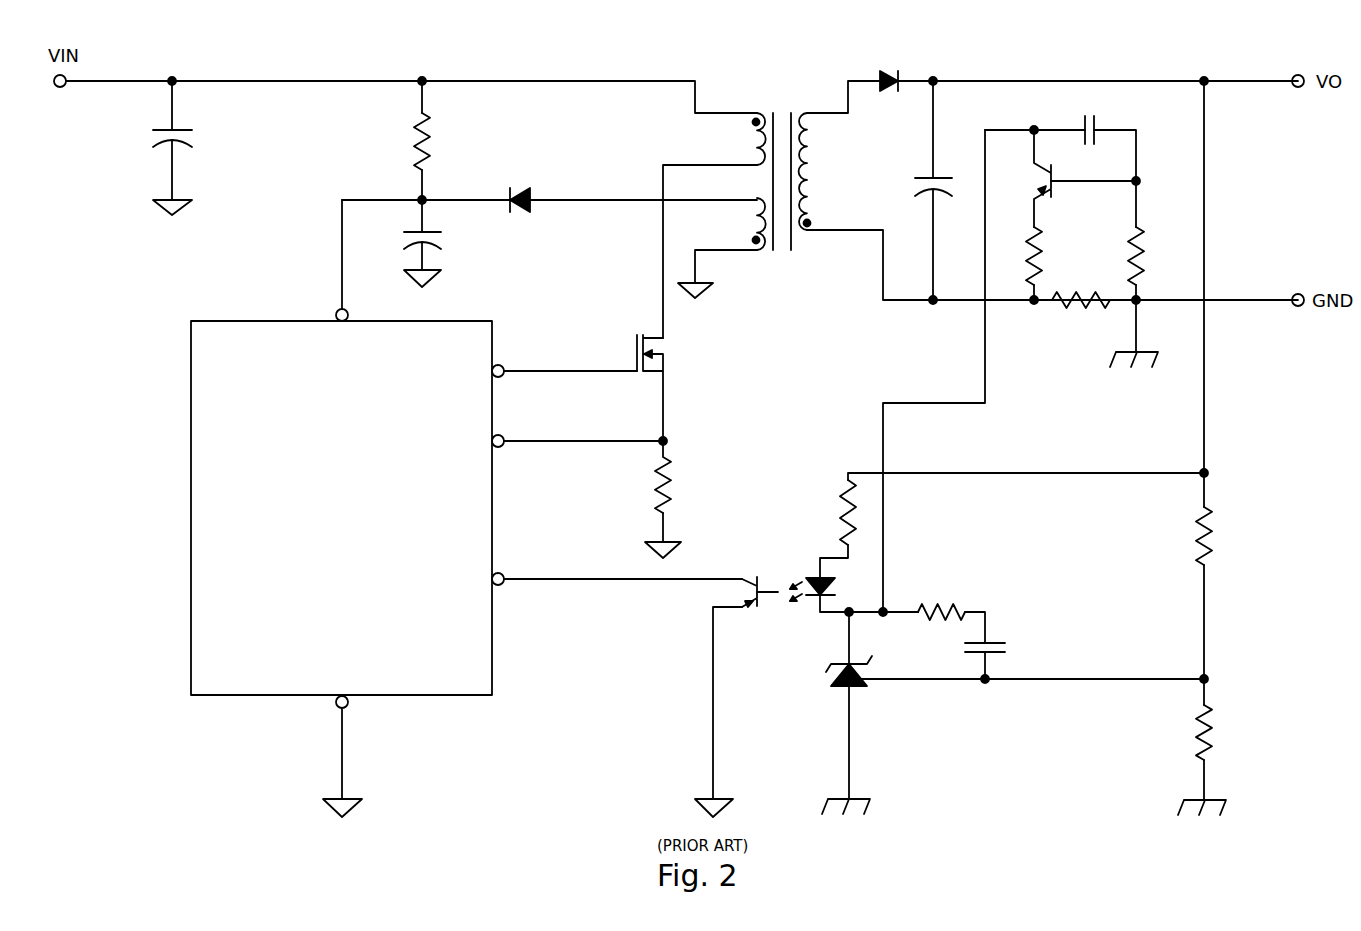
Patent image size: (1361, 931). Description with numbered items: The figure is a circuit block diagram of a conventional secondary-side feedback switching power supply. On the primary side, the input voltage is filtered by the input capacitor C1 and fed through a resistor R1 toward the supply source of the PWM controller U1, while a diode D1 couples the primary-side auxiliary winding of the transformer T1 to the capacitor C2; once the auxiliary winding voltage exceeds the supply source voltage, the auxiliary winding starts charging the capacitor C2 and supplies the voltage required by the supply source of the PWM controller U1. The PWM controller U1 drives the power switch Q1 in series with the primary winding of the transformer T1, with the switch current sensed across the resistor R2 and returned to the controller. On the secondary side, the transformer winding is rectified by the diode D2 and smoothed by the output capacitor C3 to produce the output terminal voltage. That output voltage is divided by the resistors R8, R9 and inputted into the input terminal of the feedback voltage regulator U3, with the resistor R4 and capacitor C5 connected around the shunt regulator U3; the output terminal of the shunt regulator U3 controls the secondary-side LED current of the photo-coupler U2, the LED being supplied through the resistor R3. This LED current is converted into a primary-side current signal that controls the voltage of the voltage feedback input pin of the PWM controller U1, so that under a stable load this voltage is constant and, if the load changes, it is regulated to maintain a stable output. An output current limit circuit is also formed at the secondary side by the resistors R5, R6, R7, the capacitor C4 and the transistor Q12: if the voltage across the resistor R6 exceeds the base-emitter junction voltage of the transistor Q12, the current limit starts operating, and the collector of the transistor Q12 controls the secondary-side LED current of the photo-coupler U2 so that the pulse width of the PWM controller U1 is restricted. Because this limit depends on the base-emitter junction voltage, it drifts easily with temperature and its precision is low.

The input capacitor C1 is at (157, 148).
The startup resistor R1 is at (407, 140).
The capacitor C2 is at (408, 243).
The auxiliary winding diode D1 is at (523, 187).
The transformer T1 is at (777, 162).
The output rectifier diode D2 is at (893, 69).
The output capacitor C3 is at (922, 190).
The capacitor C4 is at (1104, 122).
The transistor Q12 is at (1023, 178).
The resistor R5 is at (1048, 256).
The resistor R6 is at (1085, 313).
The resistor R7 is at (1152, 256).
The PWM controller U1 is at (347, 508).
The power MOSFET switch Q1 is at (666, 388).
The current sense resistor R2 is at (679, 477).
The photo-coupler U2 is at (788, 581).
The resistor R3 is at (835, 512).
The resistor R4 is at (941, 601).
The capacitor C5 is at (1001, 654).
The feedback voltage regulator U3 is at (838, 650).
The resistor R8 is at (1220, 536).
The resistor R9 is at (1218, 732).